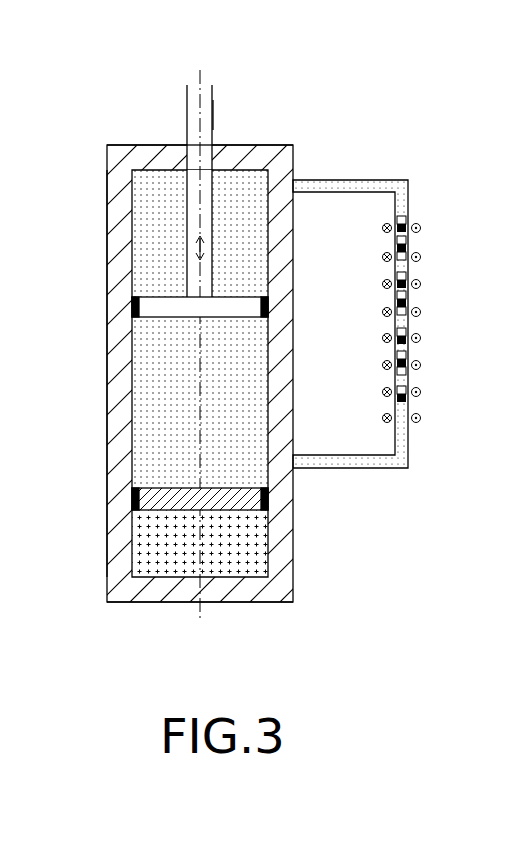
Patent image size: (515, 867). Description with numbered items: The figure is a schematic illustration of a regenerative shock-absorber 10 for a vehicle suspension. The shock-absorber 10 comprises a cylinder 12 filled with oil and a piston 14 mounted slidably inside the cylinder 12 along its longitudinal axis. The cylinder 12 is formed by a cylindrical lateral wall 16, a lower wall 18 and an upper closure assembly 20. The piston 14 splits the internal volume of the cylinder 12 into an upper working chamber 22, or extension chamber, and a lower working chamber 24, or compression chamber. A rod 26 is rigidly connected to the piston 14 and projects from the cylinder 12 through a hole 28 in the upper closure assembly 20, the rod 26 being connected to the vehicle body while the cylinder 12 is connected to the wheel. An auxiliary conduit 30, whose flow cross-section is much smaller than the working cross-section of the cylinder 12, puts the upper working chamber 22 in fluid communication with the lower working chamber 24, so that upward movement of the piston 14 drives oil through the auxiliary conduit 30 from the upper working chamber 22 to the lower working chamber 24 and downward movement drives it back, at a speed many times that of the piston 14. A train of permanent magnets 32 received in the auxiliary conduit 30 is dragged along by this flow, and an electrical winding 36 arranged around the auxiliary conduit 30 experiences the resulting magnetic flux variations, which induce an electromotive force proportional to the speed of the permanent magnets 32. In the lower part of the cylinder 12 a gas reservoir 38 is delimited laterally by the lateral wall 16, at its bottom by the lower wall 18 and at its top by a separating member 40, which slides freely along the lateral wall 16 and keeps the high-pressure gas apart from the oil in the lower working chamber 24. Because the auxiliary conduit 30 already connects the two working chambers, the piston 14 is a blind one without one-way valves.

The regenerative shock-absorber 10 is at (316, 170).
The cylinder 12 is at (294, 568).
The piston 14 is at (148, 324).
The cylindrical lateral wall 16 is at (107, 558).
The lower wall 18 is at (155, 603).
The upper closure assembly 20 is at (133, 147).
The upper working chamber 22 is at (150, 226).
The lower working chamber 24 is at (150, 383).
The rod 26 is at (213, 100).
The hole 28 is at (213, 130).
The auxiliary conduit 30 is at (408, 200).
The permanent magnets 32 is at (408, 277).
The electrical winding 36 is at (421, 228).
The gas reservoir 38 is at (235, 552).
The separating member 40 is at (150, 487).